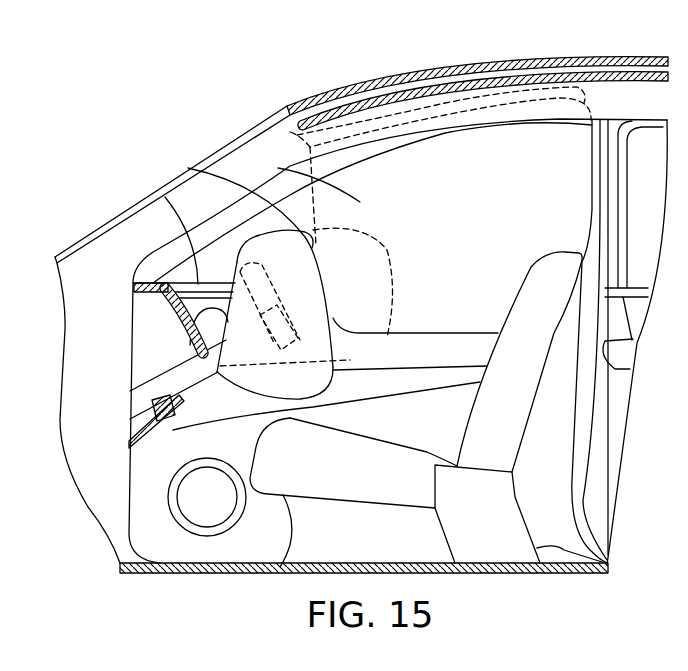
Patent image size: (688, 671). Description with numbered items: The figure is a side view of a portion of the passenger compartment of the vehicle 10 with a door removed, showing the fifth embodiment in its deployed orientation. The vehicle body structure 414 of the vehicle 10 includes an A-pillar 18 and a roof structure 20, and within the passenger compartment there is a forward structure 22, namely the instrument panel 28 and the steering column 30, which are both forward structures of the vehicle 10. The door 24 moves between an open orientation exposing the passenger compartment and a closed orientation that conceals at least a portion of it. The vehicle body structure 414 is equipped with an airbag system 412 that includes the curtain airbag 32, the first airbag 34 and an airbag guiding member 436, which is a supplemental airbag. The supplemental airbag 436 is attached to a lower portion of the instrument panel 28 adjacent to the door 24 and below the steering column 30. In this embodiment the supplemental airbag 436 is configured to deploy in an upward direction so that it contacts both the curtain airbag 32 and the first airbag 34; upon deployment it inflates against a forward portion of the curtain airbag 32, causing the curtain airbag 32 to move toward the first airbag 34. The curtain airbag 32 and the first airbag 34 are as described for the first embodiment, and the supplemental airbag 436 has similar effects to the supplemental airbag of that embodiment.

The vehicle 10 is at (212, 110).
The A-pillar 18 is at (280, 147).
The roof structure 20 is at (507, 66).
The forward structure 22 is at (120, 367).
The door 24 is at (437, 345).
The instrument panel 28 is at (217, 373).
The steering column 30 is at (312, 394).
The curtain airbag 32 is at (242, 142).
The first airbag 34 is at (236, 160).
The airbag system 412 is at (172, 195).
The vehicle body structure 414 is at (368, 77).
The airbag guiding member 436 is at (148, 232).